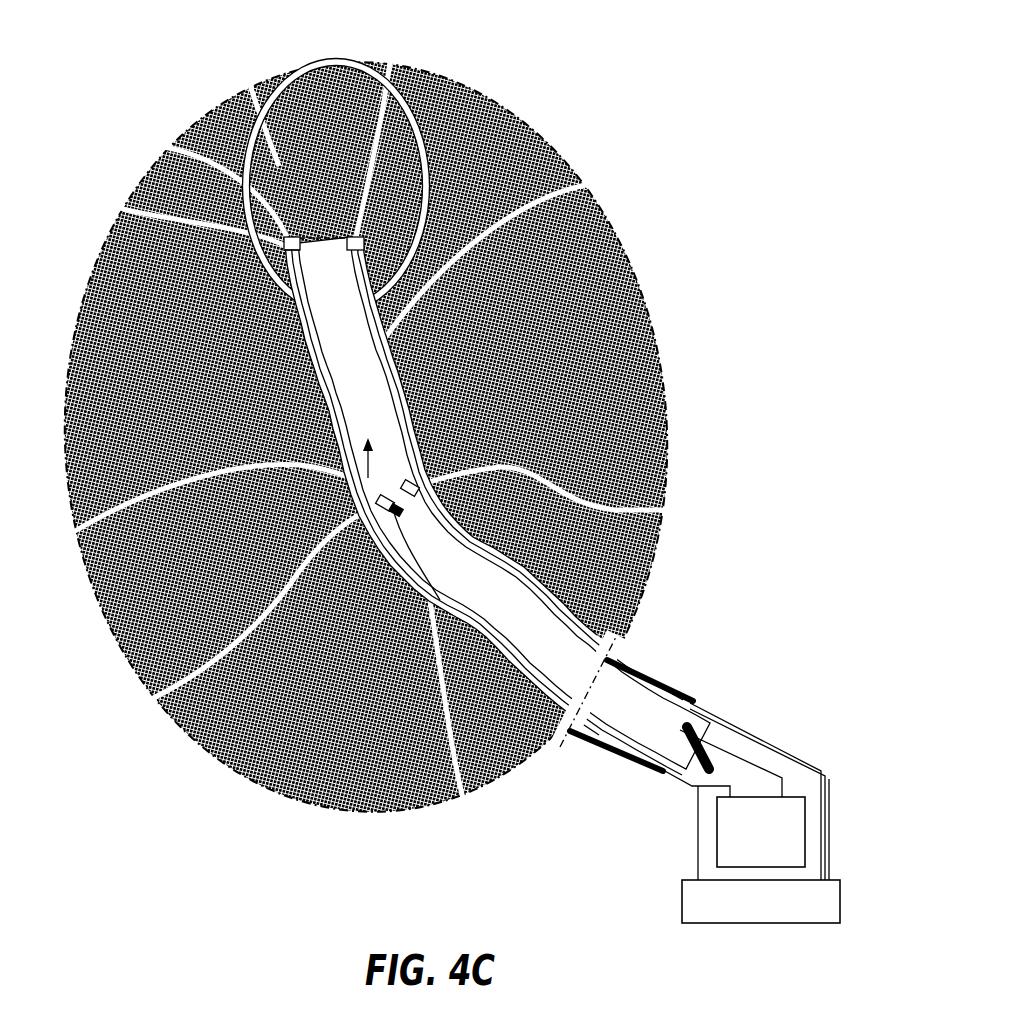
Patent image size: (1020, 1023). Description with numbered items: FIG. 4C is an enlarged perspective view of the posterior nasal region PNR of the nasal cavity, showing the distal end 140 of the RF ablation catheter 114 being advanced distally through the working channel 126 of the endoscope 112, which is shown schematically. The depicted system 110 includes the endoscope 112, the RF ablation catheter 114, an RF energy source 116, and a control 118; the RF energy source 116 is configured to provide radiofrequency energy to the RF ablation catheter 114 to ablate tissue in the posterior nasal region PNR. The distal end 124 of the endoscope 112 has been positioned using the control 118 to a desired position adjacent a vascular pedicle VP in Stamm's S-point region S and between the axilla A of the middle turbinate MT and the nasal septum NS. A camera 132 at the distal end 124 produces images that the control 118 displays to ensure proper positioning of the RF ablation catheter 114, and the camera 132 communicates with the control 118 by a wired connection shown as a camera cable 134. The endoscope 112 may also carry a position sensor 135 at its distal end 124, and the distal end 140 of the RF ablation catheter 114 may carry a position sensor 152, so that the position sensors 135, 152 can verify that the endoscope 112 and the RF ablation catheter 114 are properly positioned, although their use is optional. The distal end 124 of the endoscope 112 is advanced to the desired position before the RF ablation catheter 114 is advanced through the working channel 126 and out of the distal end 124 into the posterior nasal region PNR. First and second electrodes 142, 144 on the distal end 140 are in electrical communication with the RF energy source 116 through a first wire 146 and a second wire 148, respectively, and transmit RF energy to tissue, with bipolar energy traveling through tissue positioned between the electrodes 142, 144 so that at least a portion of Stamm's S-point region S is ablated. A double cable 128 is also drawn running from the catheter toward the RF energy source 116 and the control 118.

The system 110 is at (755, 556).
The endoscope 112 is at (658, 675).
The RF ablation catheter 114 is at (697, 723).
The RF energy source 116 is at (806, 832).
The control 118 is at (800, 923).
The distal end of endoscope 124 is at (356, 238).
The working channel 126 is at (350, 394).
The cable 128 is at (730, 723).
The camera 132 is at (287, 237).
The camera cable 134 is at (625, 762).
The position sensor 135 is at (287, 247).
The distal end of RF ablation catheter 140 is at (390, 498).
The first electrode 142 is at (400, 492).
The second electrode 144 is at (393, 500).
The first wire 146 is at (770, 767).
The second wire 148 is at (697, 790).
The position sensor 152 is at (392, 505).
The Stamm's S-point region S is at (340, 62).
The vascular pedicle VP is at (279, 166).
The posterior nasal region PNR is at (604, 291).
The axilla A is at (150, 296).
The nasal septum NS is at (572, 367).
The middle turbinate MT is at (332, 733).